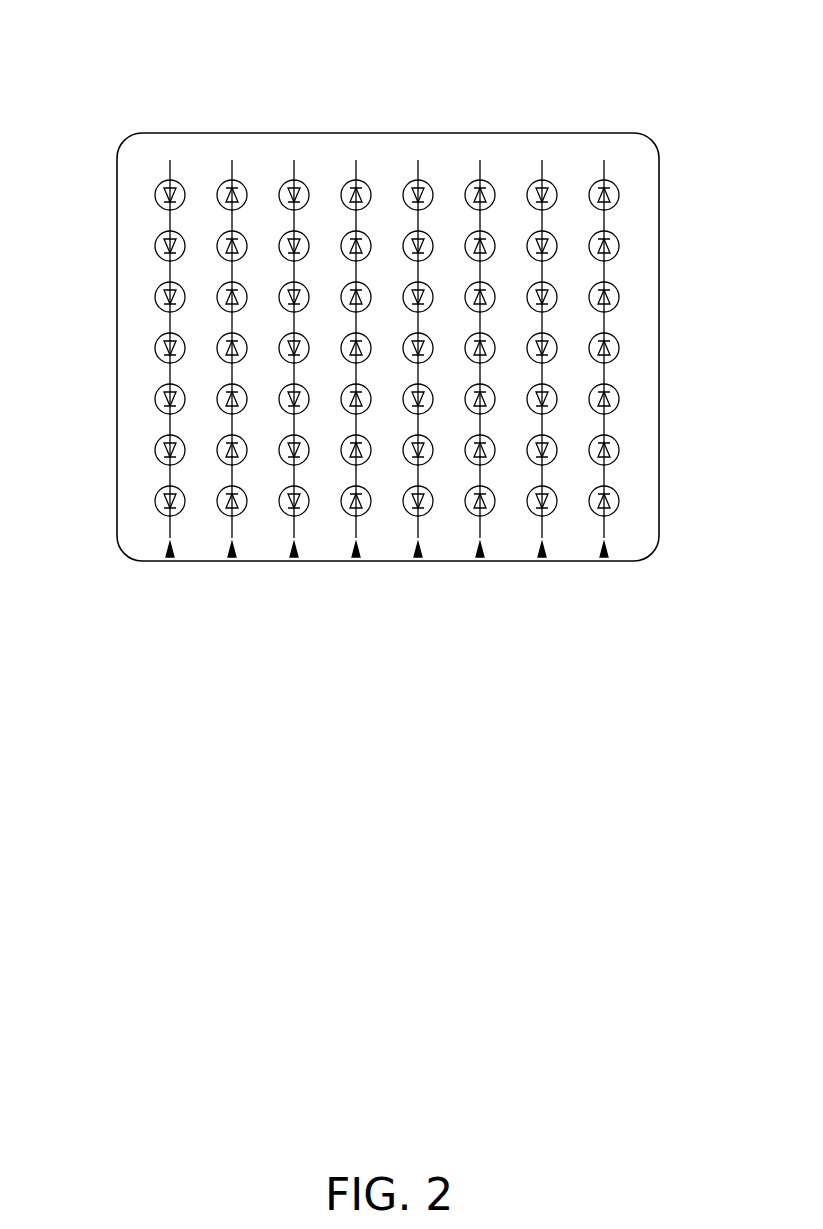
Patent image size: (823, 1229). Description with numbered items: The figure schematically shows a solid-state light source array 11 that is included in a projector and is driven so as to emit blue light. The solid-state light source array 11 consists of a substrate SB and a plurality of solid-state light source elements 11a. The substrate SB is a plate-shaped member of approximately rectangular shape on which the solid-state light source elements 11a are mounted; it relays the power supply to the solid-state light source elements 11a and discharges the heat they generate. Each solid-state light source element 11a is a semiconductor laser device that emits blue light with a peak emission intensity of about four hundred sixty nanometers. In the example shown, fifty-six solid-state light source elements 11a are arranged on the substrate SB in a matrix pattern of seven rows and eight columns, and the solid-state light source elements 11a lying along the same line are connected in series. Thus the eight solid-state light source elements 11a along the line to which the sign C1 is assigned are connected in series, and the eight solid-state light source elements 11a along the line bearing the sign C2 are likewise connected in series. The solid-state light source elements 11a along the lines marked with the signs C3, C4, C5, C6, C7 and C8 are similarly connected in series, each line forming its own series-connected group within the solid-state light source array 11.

The solid-state light source array 11 is at (452, 114).
The solid-state light source element 11a is at (619, 191).
The substrate SB is at (575, 132).
The sign C1 is at (171, 394).
The sign C2 is at (233, 394).
The sign C3 is at (295, 394).
The sign C4 is at (357, 394).
The sign C5 is at (419, 394).
The sign C6 is at (481, 394).
The sign C7 is at (543, 394).
The sign C8 is at (605, 394).